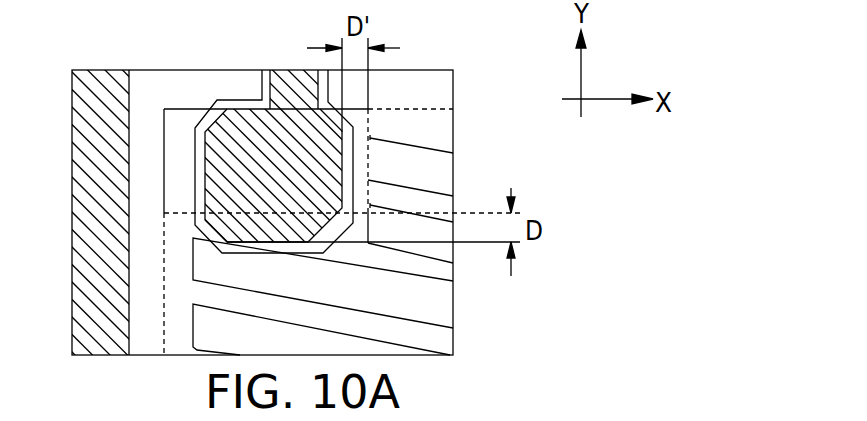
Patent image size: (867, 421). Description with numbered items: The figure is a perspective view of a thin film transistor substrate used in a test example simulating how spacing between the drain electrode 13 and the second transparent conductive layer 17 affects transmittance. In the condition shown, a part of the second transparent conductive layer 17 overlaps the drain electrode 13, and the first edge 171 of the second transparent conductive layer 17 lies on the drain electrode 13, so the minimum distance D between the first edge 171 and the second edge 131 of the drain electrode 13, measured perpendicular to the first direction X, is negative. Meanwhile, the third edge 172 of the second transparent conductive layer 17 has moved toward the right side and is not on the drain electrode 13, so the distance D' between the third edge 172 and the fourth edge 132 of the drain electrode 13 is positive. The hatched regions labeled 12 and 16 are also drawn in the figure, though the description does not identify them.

The gate structure 12 is at (204, 168).
The drain electrode 13 is at (213, 148).
The first dielectric layer 16 is at (173, 194).
The second transparent conductive layer 17 is at (165, 275).
The second edge 131 is at (306, 246).
The fourth edge 132 is at (341, 161).
The first edge 171 is at (305, 213).
The third edge 172 is at (370, 124).